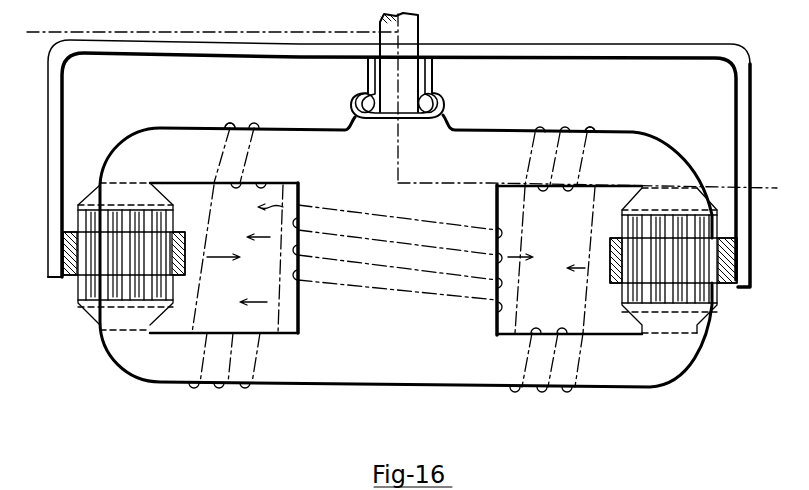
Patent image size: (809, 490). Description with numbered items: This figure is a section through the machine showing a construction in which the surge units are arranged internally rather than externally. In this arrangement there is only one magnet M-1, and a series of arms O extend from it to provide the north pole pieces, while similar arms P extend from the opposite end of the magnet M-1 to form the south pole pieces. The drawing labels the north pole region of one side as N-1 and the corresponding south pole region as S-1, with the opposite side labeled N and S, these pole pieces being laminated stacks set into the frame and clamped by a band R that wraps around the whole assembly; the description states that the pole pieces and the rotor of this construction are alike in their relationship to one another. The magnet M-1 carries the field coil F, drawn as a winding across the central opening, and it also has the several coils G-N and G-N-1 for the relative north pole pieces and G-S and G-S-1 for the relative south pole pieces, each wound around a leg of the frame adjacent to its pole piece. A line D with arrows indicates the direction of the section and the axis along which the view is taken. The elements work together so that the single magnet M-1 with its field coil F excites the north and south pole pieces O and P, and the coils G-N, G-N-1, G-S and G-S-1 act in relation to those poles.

The arms forming the south pole pieces P is at (118, 375).
The retaining band R is at (740, 290).
The section line / axis D is at (780, 198).
The arms providing the north pole pieces O is at (191, 114).
The magnet M-1 is at (487, 203).
The field coil F is at (373, 297).
The left north pole shoe N-1 is at (125, 207).
The left south pole shoe S-1 is at (125, 300).
The right north pole shoe N is at (669, 213).
The right south pole shoe S is at (669, 308).
The coil for north pole piece G-N-1 is at (279, 160).
The coil for south pole piece G-S-1 is at (261, 365).
The coil for north pole piece G-N is at (586, 160).
The coil for south pole piece G-S is at (586, 371).